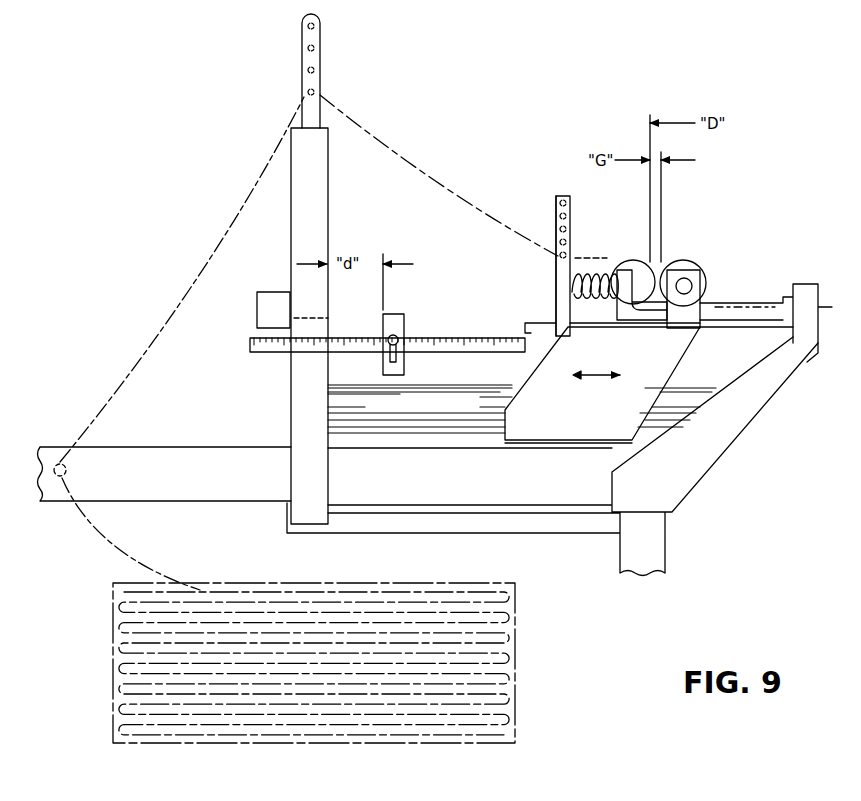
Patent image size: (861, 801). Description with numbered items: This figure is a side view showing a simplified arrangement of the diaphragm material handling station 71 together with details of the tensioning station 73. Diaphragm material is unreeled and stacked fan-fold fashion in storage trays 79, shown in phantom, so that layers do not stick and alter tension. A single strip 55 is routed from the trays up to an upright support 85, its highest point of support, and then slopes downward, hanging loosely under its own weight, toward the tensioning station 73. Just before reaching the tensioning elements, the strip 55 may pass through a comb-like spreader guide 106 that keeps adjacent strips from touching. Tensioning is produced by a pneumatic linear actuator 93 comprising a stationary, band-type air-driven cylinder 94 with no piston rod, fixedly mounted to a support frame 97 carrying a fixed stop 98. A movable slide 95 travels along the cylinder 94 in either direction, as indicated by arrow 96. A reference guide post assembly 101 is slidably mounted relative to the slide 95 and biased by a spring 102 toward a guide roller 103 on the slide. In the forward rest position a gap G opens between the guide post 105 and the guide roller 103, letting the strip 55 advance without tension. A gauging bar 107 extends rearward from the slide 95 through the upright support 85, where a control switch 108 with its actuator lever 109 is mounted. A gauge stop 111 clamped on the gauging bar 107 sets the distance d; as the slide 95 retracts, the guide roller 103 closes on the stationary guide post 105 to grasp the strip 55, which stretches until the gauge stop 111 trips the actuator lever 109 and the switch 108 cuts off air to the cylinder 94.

The strip 55 is at (405, 160).
The diaphragm material handling station 71 is at (140, 316).
The tensioning station 73 is at (536, 110).
The storage tray 79 is at (243, 585).
The upright support 85 is at (329, 190).
The pneumatic linear actuator 93 is at (482, 438).
The cylinder 94 is at (432, 410).
The slide 95 is at (539, 428).
The arrow 96 is at (597, 379).
The support frame 97 is at (728, 424).
The stop 98 is at (792, 291).
The reference guide post assembly 101 is at (620, 320).
The spring 102 is at (580, 262).
The guide roller 103 is at (690, 262).
The guide post 105 is at (655, 277).
The spreader guide 106 is at (556, 213).
The gauging bar 107 is at (459, 337).
The control switch 108 is at (269, 297).
The actuator lever 109 is at (330, 317).
The gauge stop 111 is at (397, 314).